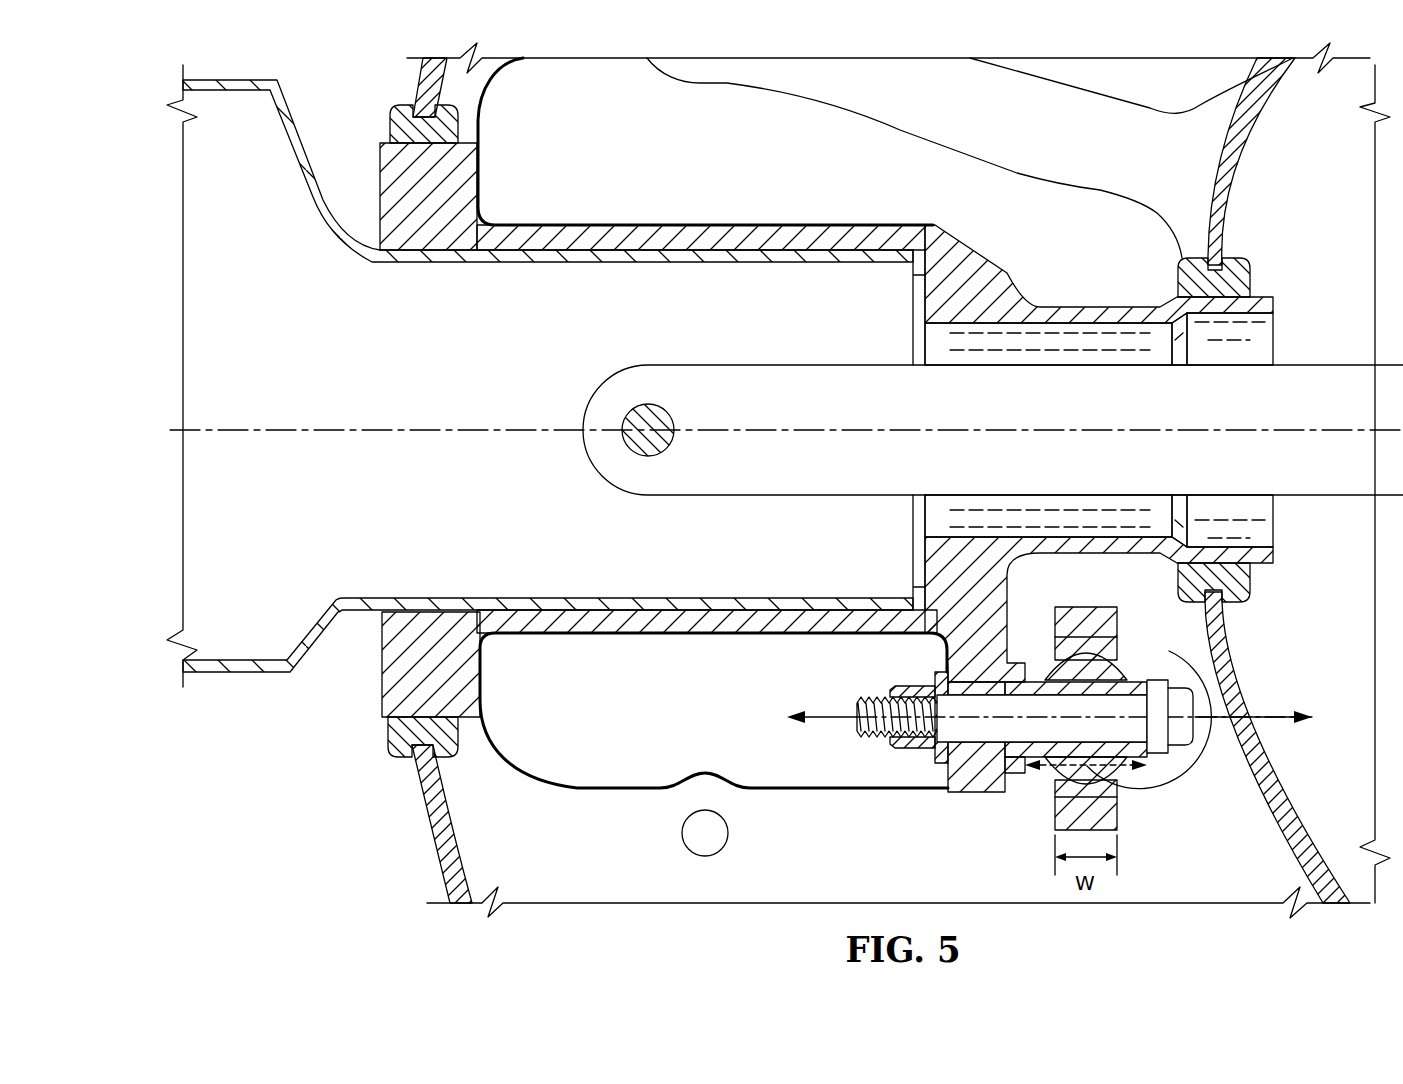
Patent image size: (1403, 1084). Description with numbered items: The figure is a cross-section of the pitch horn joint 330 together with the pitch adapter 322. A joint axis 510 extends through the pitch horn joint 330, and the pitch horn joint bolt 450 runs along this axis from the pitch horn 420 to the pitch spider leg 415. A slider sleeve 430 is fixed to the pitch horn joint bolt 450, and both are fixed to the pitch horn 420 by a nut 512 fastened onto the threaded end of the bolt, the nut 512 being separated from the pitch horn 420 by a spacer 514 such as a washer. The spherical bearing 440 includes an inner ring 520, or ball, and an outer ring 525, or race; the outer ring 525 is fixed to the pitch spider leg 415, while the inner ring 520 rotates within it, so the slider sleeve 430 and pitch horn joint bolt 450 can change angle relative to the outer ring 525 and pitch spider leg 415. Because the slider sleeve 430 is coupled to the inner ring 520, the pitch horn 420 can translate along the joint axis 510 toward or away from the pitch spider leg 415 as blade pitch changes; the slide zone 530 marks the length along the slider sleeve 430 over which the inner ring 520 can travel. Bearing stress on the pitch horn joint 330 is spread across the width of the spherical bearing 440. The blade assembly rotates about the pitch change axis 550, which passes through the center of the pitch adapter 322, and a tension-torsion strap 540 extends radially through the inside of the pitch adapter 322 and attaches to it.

The pitch adapter 322 is at (215, 378).
The pitch horn joint 330 is at (955, 837).
The pitch spider leg 415 is at (1083, 612).
The pitch horn 420 is at (992, 790).
The slider sleeve 430 is at (1180, 752).
The spherical bearing 440 is at (1030, 640).
The pitch horn joint bolt 450 is at (856, 735).
The joint axis 510 is at (828, 714).
The nut 512 is at (903, 752).
The spacer 514 is at (938, 674).
The inner ring 520 is at (1118, 682).
The outer ring 525 is at (1088, 640).
The slide zone 530 is at (1118, 824).
The tension-torsion strap 540 is at (812, 362).
The pitch change axis 550 is at (382, 424).